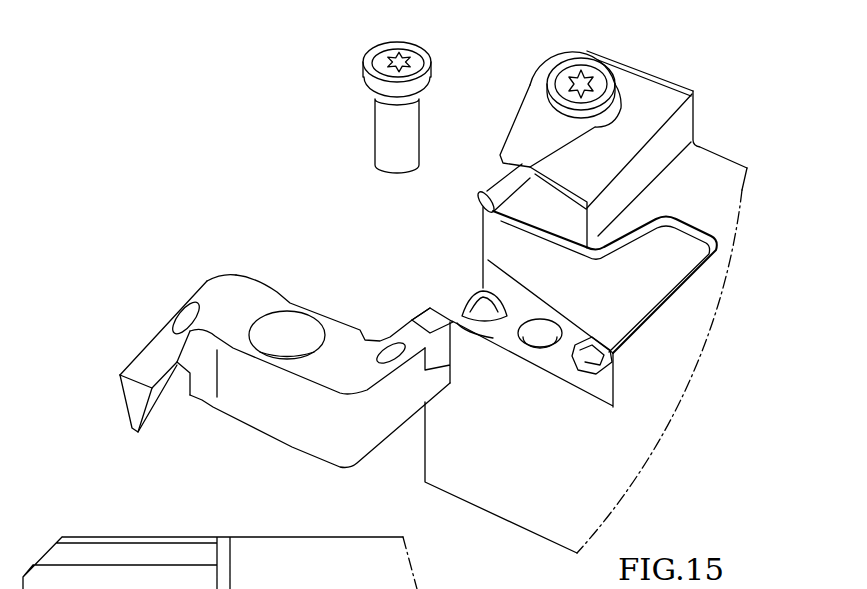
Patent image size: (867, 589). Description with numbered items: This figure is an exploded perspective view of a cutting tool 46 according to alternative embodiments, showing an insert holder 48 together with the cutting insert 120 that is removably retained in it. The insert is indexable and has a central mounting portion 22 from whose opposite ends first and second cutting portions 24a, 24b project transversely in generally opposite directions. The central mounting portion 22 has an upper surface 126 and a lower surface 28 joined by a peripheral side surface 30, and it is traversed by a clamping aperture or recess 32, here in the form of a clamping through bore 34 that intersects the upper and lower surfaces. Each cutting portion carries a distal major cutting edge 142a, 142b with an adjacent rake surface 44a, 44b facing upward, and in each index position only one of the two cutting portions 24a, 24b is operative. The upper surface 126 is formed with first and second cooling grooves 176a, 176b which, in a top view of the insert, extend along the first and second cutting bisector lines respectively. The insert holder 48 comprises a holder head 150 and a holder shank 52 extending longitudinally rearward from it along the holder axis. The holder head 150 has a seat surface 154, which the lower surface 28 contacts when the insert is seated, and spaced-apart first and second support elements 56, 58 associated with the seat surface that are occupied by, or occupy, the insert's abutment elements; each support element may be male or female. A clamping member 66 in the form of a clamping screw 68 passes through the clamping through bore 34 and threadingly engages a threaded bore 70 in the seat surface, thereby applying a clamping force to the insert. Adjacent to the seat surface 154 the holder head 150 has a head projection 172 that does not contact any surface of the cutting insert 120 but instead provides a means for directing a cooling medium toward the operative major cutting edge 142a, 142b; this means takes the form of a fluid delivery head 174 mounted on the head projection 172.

The central mounting portion 22 is at (279, 416).
The first cutting portion 24a is at (173, 405).
The second cutting portion 24b is at (432, 396).
The lower surface 28 is at (250, 437).
The peripheral side surface 30 is at (379, 432).
The clamping aperture or recess 32 is at (297, 312).
The clamping through bore 34 is at (314, 312).
The first rake surface 44a is at (145, 372).
The second rake surface 44b is at (427, 323).
The cutting tool 46 is at (350, 169).
The insert holder 48 is at (722, 205).
The holder shank 52 is at (700, 333).
The first support element 56 is at (597, 328).
The second support element 58 is at (481, 278).
The clamping member 66 is at (428, 58).
The clamping screw 68 is at (412, 123).
The threaded bore 70 is at (555, 318).
The cutting insert 120 is at (219, 278).
The upper surface 126 is at (251, 280).
The first major cutting edge 142a is at (143, 372).
The second major cutting edge 142b is at (408, 306).
The holder head 150 is at (546, 460).
The seat surface 154 is at (492, 338).
The head projection 172 is at (674, 147).
The fluid delivery head 174 is at (526, 133).
The first cooling groove 176a is at (183, 320).
The second cooling groove 176b is at (390, 342).